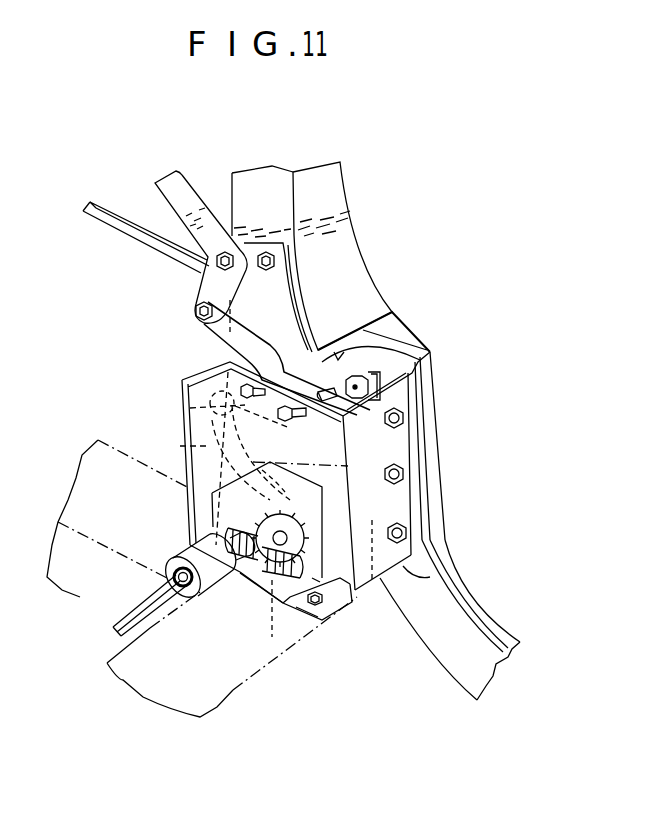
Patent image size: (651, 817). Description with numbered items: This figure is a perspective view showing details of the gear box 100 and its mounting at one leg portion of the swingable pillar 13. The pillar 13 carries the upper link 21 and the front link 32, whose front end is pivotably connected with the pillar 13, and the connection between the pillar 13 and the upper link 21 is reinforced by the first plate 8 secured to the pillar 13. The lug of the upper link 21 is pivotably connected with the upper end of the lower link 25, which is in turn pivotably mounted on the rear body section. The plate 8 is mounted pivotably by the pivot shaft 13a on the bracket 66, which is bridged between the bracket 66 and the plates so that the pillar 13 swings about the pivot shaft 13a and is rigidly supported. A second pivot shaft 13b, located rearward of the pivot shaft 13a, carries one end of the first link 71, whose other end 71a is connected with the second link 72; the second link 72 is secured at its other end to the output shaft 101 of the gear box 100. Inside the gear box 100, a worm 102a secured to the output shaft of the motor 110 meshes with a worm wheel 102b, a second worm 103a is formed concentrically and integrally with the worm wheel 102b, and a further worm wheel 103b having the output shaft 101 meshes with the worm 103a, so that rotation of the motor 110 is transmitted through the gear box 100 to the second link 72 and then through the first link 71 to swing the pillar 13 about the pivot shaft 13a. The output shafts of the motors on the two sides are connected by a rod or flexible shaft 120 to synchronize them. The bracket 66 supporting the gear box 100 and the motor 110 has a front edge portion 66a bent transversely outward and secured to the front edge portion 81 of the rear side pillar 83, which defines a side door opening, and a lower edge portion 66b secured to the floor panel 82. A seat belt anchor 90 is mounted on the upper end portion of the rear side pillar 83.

The first plate 8 is at (272, 283).
The pillar 13 is at (338, 233).
The pivot shaft 13a is at (363, 328).
The pivot shaft 13b is at (173, 402).
The upper link 21 is at (202, 192).
The lower link 25 is at (250, 343).
The front link 32 is at (153, 247).
The bracket 66 is at (203, 365).
The front edge portion 66a is at (427, 557).
The lower edge portion 66b is at (300, 617).
The first link 71 is at (183, 440).
The other end of first link 71a is at (283, 453).
The second link 72 is at (340, 464).
The front edge portion 81 is at (408, 573).
The floor panel 82 is at (212, 700).
The rear side pillar 83 is at (427, 351).
The seat belt anchor 90 is at (397, 340).
The gear box 100 is at (300, 610).
The output shaft 101 is at (333, 517).
The worm 102a is at (220, 518).
The worm wheel 102b is at (243, 585).
The second worm 103a is at (310, 625).
The worm wheel 103b is at (333, 600).
The motor 110 is at (207, 593).
The rod or flexible shaft 120 is at (130, 606).